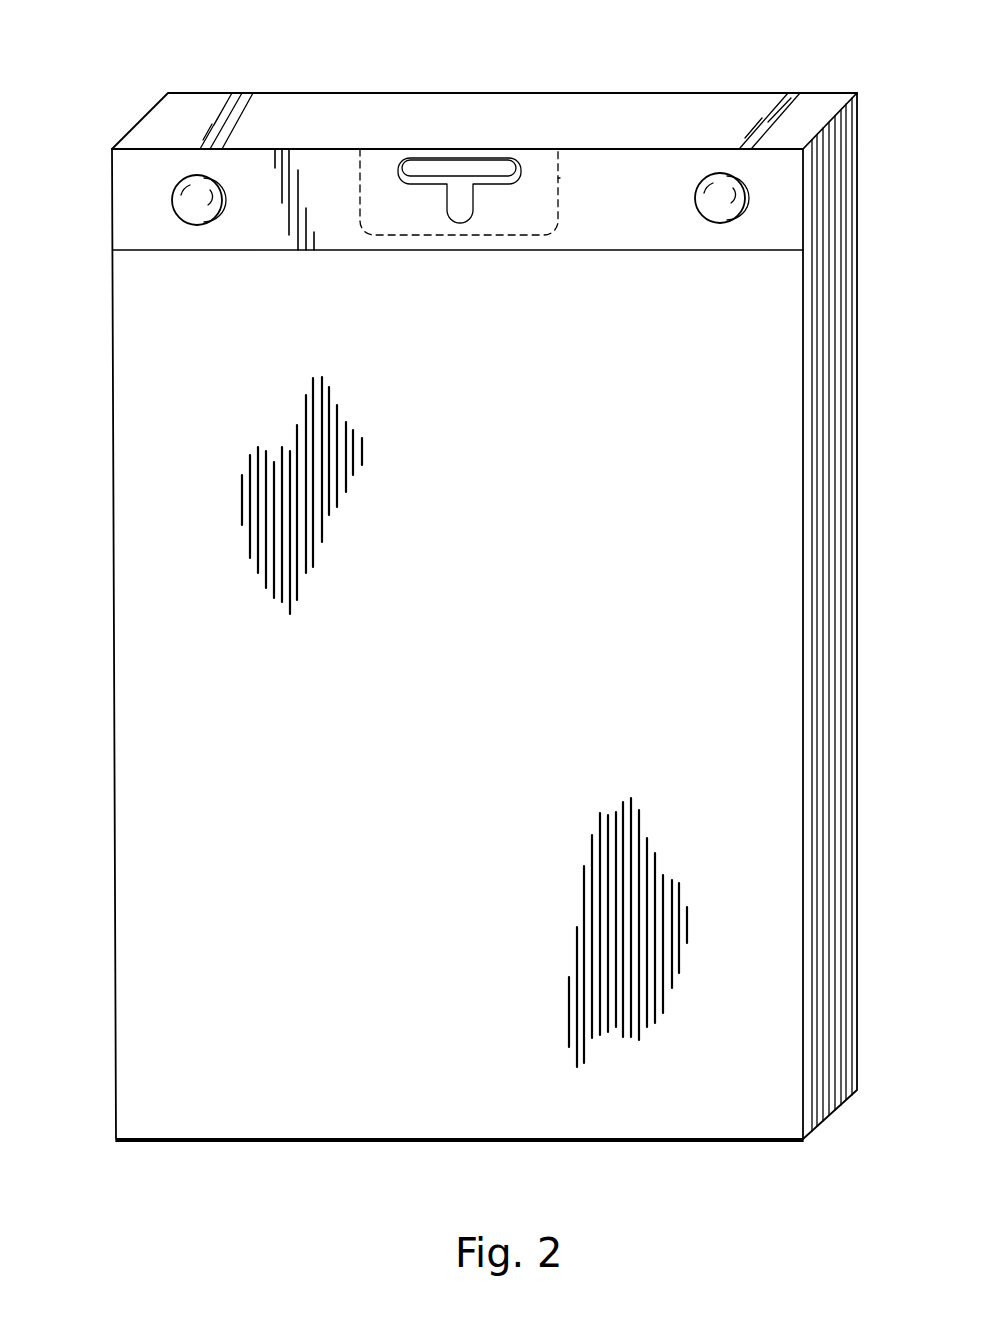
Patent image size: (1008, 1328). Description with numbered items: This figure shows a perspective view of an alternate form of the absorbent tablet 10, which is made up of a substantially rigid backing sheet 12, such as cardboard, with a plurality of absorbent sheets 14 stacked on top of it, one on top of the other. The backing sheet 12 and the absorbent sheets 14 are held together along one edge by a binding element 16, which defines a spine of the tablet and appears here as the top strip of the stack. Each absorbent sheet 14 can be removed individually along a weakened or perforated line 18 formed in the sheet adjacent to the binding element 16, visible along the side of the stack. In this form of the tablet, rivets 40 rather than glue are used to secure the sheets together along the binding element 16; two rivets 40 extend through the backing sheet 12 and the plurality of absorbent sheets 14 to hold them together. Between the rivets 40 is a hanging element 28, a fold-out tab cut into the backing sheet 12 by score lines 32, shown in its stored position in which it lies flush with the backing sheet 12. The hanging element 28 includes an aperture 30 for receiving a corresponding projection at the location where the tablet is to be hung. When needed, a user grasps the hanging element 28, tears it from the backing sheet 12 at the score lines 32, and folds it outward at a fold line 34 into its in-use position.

The absorbent tablet 10 is at (314, 72).
The backing sheet 12 is at (478, 658).
The absorbent sheets 14 is at (848, 1098).
The binding element 16 is at (133, 128).
The perforated line 18 is at (848, 216).
The hanging element 28 is at (532, 221).
The aperture 30 is at (400, 172).
The score lines 32 is at (558, 178).
The fold line 34 is at (484, 148).
The rivets 40 is at (185, 203).